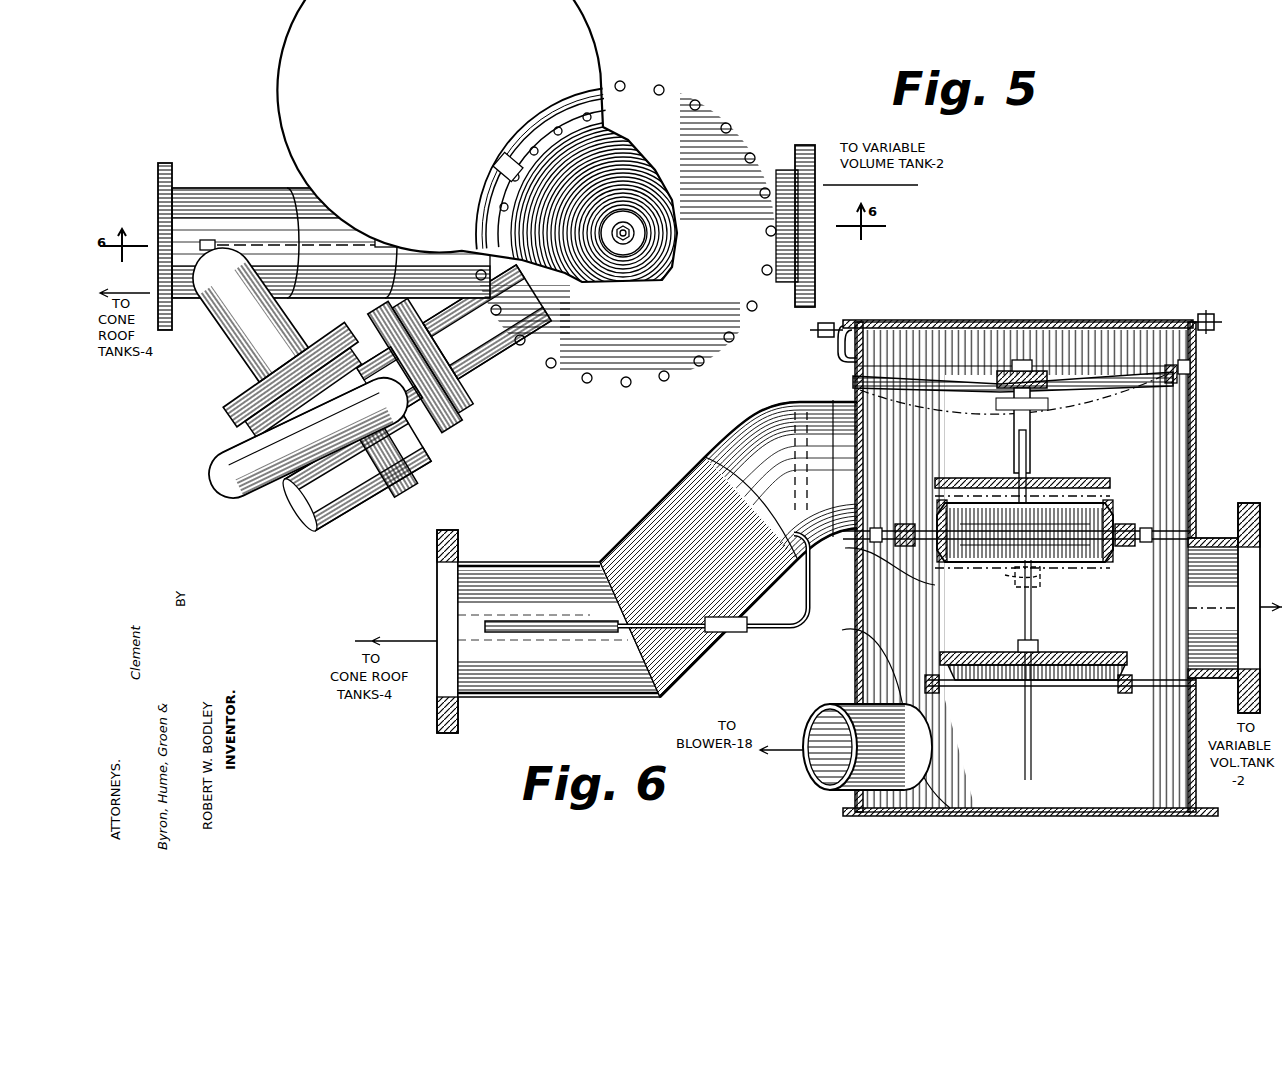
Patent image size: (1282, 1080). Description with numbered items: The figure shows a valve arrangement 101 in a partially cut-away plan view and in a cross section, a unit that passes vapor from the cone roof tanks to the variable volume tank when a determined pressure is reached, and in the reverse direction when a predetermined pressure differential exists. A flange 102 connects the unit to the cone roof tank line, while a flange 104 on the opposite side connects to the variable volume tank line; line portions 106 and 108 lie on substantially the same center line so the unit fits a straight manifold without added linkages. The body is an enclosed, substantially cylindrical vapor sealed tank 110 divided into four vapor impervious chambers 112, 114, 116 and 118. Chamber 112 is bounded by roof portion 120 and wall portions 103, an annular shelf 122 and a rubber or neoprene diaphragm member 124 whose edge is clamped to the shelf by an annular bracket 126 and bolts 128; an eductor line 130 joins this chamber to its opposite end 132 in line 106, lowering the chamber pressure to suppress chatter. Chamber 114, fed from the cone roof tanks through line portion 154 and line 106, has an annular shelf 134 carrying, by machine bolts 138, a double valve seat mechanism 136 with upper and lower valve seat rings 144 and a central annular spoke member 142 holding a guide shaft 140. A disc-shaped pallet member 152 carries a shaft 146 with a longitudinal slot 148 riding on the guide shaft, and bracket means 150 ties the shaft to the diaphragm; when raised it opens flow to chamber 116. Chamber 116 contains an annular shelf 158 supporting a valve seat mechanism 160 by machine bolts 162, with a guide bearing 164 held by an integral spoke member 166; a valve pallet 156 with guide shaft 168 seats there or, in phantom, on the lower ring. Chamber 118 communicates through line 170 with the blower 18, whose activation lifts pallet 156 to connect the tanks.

In FIG. 5, the blower 18 is at (232, 448).
In FIG. 5, the valve arrangement 101 is at (763, 79).
In FIG. 6, the valve arrangement 101 is at (1248, 427).
In FIG. 5, the flange 102 is at (178, 162).
In FIG. 6, the flange 102 is at (455, 530).
In FIG. 6, the wall portions 103 is at (1215, 318).
In FIG. 5, the flange 104 is at (812, 152).
In FIG. 6, the flange 104 is at (1262, 492).
In FIG. 5, the line portion 106 is at (240, 192).
In FIG. 6, the line portion 106 is at (550, 566).
In FIG. 5, the line portion 108 is at (785, 170).
In FIG. 6, the line portion 108 is at (1200, 538).
In FIG. 5, the vapor sealed tank 110 is at (508, 152).
In FIG. 6, the vapor sealed tank 110 is at (1196, 400).
In FIG. 6, the chamber 112 is at (990, 322).
In FIG. 6, the chamber 114 is at (1190, 448).
In FIG. 6, the chamber 116 is at (856, 630).
In FIG. 6, the chamber 118 is at (1196, 790).
In FIG. 5, the roof portion 120 is at (584, 382).
In FIG. 6, the roof portion 120 is at (1018, 322).
In FIG. 6, the annular shelf 122 is at (1190, 382).
In FIG. 5, the diaphragm member 124 is at (585, 150).
In FIG. 6, the diaphragm member 124 is at (1082, 372).
In FIG. 5, the annular bracket 126 is at (600, 78).
In FIG. 6, the annular bracket 126 is at (1190, 356).
In FIG. 5, the bolts 128 is at (530, 132).
In FIG. 6, the bolts 128 is at (1170, 365).
In FIG. 5, the eductor line 130 is at (440, 150).
In FIG. 6, the eductor line 130 is at (695, 616).
In FIG. 5, the opposite end of eductor line 132 is at (212, 237).
In FIG. 6, the opposite end of eductor line 132 is at (492, 632).
In FIG. 6, the annular shelf 134 is at (875, 548).
In FIG. 6, the double valve seat mechanism 136 is at (1132, 560).
In FIG. 6, the machine bolts 138 is at (925, 562).
In FIG. 6, the guide shaft 140 is at (1018, 445).
In FIG. 6, the annular spoke member 142 is at (1080, 500).
In FIG. 6, the annular valve seat rings 144 is at (1108, 518).
In FIG. 6, the shaft 146 is at (1030, 428).
In FIG. 6, the longitudinal slot 148 is at (1012, 428).
In FIG. 5, the bracket means 150 is at (620, 255).
In FIG. 6, the bracket means 150 is at (1027, 372).
In FIG. 6, the pallet member 152 is at (1080, 478).
In FIG. 5, the line portion 154 is at (345, 188).
In FIG. 6, the line portion 154 is at (650, 512).
In FIG. 6, the valve pallet 156 is at (1036, 576).
In FIG. 6, the annular shelf 158 is at (1136, 692).
In FIG. 6, the valve seat mechanism 160 is at (1125, 665).
In FIG. 6, the machine bolts 162 is at (960, 698).
In FIG. 6, the guide bearing 164 is at (1040, 686).
In FIG. 6, the spoke member 166 is at (976, 686).
In FIG. 6, the guide shaft 168 is at (1022, 596).
In FIG. 5, the line 170 is at (464, 376).
In FIG. 6, the line 170 is at (840, 705).